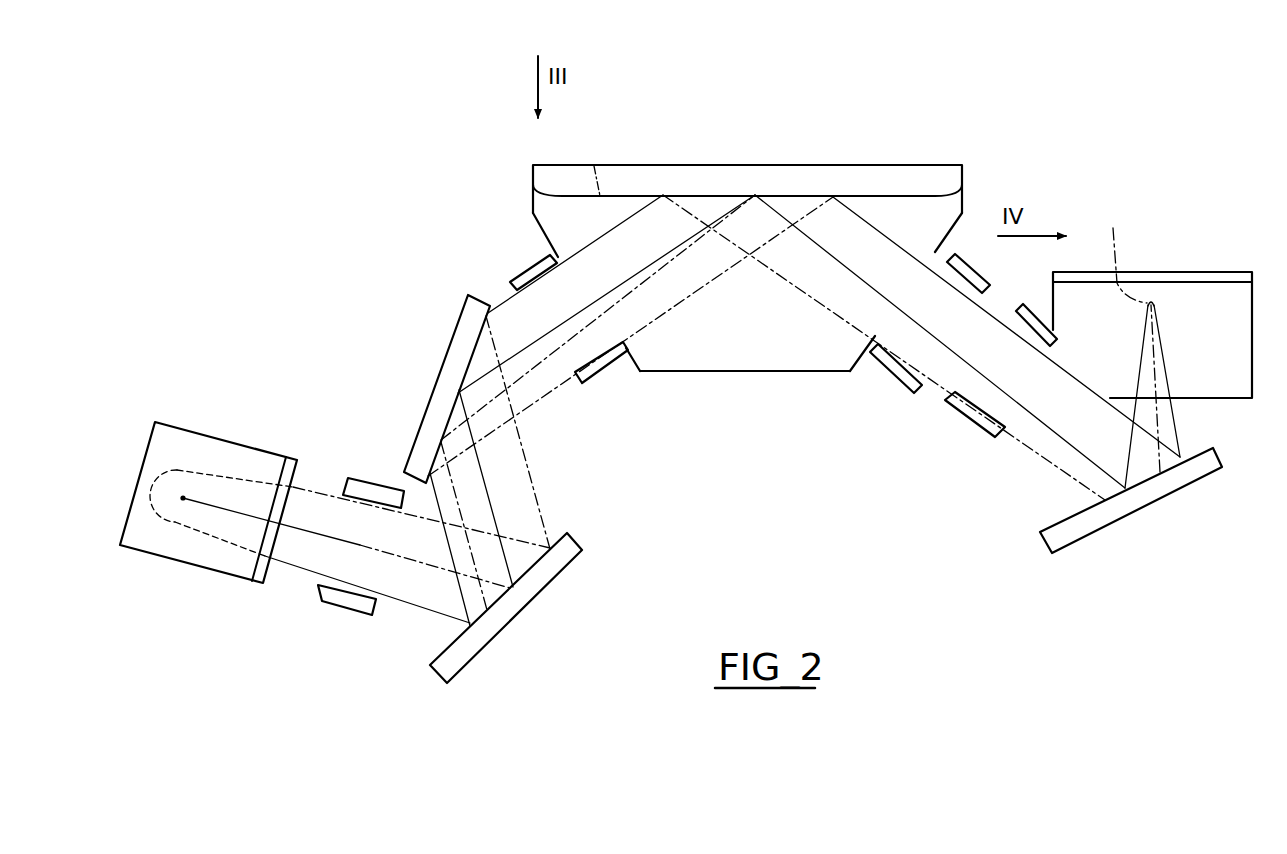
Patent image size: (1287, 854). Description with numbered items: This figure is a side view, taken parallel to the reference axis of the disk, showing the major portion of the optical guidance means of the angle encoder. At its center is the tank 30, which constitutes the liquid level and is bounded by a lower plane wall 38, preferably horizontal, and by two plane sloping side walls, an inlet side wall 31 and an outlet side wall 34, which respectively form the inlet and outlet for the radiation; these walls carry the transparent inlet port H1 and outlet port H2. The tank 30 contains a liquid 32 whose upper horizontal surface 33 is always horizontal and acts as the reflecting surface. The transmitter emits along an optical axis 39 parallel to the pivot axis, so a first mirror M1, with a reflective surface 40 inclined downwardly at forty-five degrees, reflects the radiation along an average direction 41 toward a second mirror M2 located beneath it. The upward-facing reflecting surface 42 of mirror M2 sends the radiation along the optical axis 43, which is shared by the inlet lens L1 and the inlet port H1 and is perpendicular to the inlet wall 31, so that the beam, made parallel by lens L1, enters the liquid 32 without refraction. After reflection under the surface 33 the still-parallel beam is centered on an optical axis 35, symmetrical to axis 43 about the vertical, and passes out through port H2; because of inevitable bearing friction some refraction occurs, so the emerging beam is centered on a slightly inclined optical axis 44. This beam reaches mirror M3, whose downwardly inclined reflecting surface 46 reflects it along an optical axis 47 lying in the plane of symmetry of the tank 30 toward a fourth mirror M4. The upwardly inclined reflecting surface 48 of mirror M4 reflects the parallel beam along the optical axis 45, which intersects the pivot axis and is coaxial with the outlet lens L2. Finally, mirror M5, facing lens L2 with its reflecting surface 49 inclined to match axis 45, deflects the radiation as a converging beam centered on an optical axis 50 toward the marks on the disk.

The tank 30 is at (652, 165).
The sloping inlet side wall 31 is at (952, 243).
The liquid 32 is at (905, 217).
The upper horizontal surface of the liquid 33 is at (850, 196).
The sloping outlet side wall 34 is at (545, 242).
The optical axis of the reflected beam 35 is at (641, 270).
The lower plane wall 38 is at (708, 378).
The optical axis of the transmitter 39 is at (1120, 252).
The reflective surface of mirror M1 40 is at (1225, 300).
The average direction of radiation from M1 to M2 41 is at (1157, 412).
The reflecting surface of mirror M2 42 is at (1050, 520).
The optical axis of the inlet beam 43 is at (902, 300).
The optical axis of the emerging beam 44 is at (547, 336).
The optical axis of the beam to lens L2 45 is at (422, 567).
The reflecting surface of mirror M3 46 is at (452, 440).
The optical axis between mirrors M3 and M4 47 is at (500, 508).
The reflecting surface of mirror M4 48 is at (458, 645).
The reflecting surface of mirror M5 49 is at (298, 478).
The optical axis of the converging beam 50 is at (183, 500).
The inlet port H1 is at (897, 378).
The outlet port H2 is at (514, 262).
The inlet lens L1 is at (968, 440).
The outlet lens L2 is at (340, 620).
The first mirror M1 is at (1175, 272).
The second mirror M2 is at (1110, 524).
The third mirror M3 is at (447, 337).
The fourth mirror M4 is at (554, 580).
The fifth mirror M5 is at (221, 436).